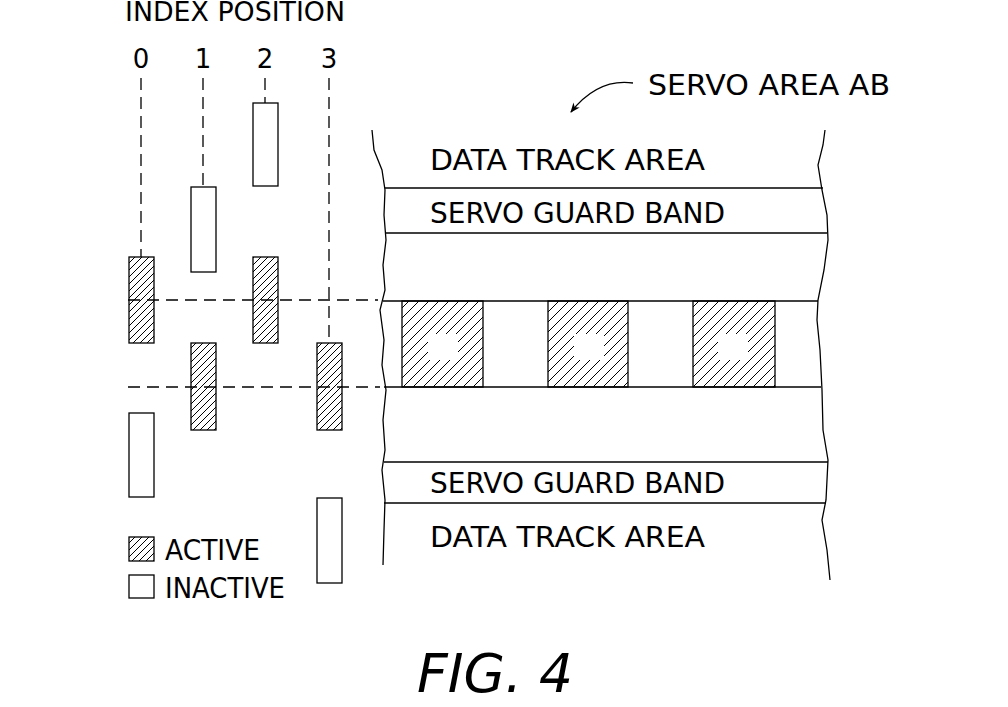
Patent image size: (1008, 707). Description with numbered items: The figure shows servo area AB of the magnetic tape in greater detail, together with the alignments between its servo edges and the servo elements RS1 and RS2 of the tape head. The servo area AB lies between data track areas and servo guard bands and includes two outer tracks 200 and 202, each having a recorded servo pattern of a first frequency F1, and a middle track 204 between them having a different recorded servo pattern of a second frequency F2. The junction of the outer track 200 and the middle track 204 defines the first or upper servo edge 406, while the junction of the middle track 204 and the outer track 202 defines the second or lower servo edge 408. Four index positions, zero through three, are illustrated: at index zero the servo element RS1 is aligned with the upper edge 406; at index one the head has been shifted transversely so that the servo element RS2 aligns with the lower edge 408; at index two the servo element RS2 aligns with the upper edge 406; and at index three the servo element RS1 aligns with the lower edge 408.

The outer track 200 is at (807, 266).
The outer track 202 is at (807, 420).
The middle track 204 is at (813, 341).
The upper servo edge 406 is at (667, 301).
The lower servo edge 408 is at (665, 387).
The servo element RS1 is at (253, 139).
The servo element RS2 is at (253, 320).